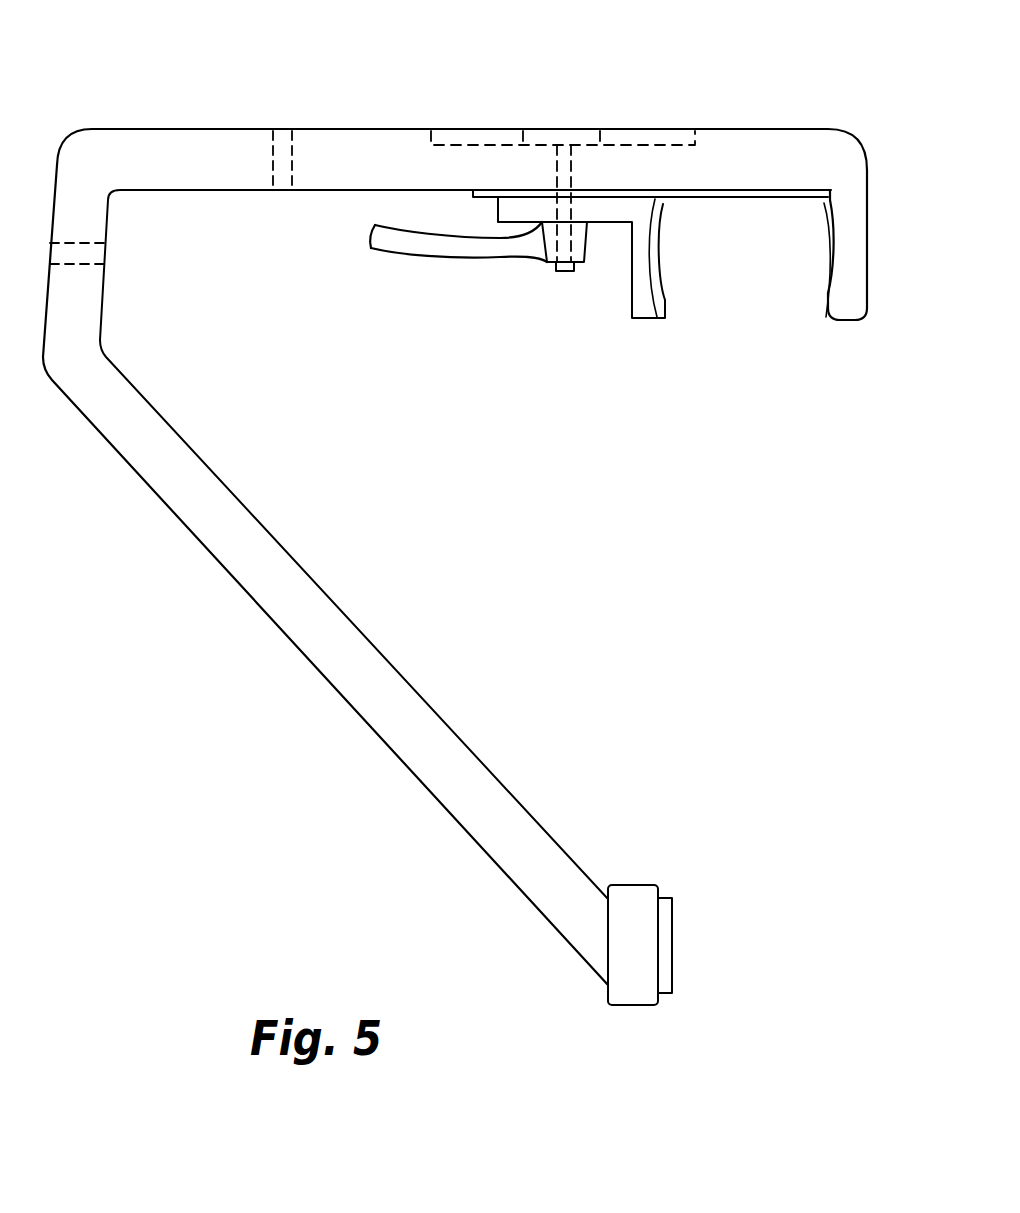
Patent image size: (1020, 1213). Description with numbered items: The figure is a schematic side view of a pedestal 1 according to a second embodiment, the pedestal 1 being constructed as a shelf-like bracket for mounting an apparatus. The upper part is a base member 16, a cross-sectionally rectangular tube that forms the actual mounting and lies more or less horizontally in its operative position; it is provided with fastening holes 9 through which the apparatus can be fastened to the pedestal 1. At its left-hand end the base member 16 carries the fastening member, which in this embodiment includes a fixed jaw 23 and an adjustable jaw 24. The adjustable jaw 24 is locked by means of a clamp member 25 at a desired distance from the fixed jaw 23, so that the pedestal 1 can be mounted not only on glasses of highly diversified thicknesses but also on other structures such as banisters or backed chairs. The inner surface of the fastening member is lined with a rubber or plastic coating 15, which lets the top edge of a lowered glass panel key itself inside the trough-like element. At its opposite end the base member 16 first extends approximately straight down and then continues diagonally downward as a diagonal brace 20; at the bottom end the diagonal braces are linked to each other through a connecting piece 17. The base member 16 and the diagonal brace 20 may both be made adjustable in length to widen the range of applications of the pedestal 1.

The pedestal 1 is at (481, 506).
The fastening holes 9 is at (288, 172).
The rubber or plastic coating 15 is at (664, 290).
The base member 16 is at (370, 130).
The connecting piece 17 is at (635, 895).
The diagonal brace 20 is at (500, 788).
The fixed jaw 23 is at (855, 210).
The adjustable jaw 24 is at (643, 310).
The clamp member 25 is at (561, 297).